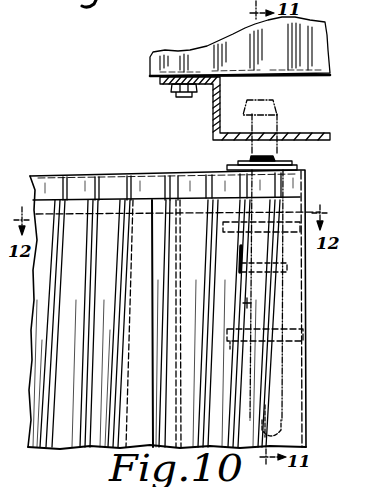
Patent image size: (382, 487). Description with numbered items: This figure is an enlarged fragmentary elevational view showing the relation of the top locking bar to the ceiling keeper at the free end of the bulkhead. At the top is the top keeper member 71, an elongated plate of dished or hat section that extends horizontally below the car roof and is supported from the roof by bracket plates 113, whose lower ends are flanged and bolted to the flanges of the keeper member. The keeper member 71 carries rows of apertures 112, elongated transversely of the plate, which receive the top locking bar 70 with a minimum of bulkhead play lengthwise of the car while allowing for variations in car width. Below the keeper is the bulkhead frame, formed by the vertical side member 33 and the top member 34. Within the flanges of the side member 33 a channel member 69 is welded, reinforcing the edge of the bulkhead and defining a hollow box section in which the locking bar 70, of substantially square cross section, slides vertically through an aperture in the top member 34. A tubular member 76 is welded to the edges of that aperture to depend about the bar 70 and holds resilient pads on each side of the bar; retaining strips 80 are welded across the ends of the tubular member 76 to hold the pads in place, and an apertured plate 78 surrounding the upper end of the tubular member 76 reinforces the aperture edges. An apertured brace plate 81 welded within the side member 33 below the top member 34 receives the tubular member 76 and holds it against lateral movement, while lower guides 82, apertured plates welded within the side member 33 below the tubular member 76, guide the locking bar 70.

The bracket plate 113 is at (332, 66).
The top keeper member 71 is at (322, 132).
The aperture 112 is at (280, 127).
The retaining strip 80 is at (243, 162).
The apertured plate 78 is at (297, 166).
The vertical side member 33 is at (297, 298).
The top member 34 is at (113, 183).
The channel member 69 is at (178, 313).
The brace plate 81 is at (223, 227).
The tubular member 76 is at (239, 253).
The locking bar 70 is at (243, 304).
The lower guide 82 is at (233, 343).